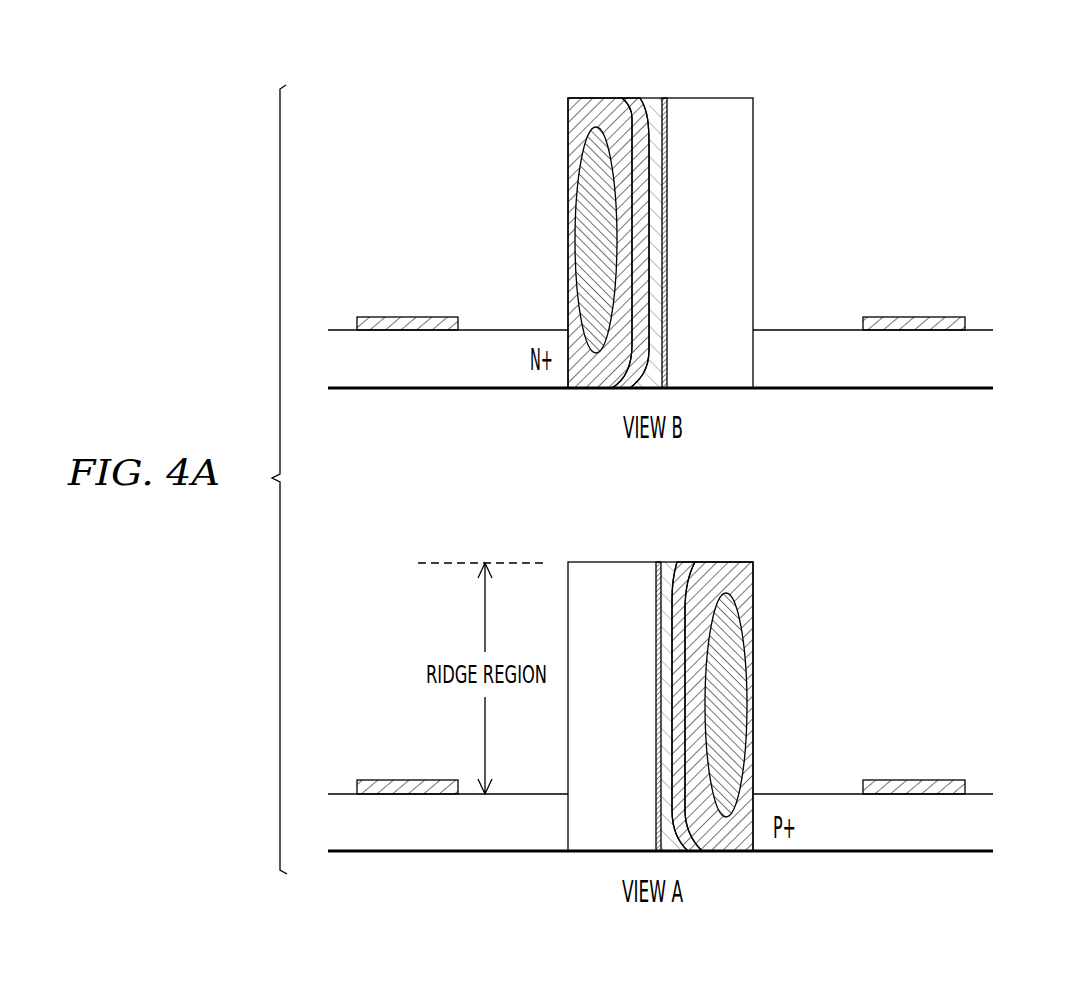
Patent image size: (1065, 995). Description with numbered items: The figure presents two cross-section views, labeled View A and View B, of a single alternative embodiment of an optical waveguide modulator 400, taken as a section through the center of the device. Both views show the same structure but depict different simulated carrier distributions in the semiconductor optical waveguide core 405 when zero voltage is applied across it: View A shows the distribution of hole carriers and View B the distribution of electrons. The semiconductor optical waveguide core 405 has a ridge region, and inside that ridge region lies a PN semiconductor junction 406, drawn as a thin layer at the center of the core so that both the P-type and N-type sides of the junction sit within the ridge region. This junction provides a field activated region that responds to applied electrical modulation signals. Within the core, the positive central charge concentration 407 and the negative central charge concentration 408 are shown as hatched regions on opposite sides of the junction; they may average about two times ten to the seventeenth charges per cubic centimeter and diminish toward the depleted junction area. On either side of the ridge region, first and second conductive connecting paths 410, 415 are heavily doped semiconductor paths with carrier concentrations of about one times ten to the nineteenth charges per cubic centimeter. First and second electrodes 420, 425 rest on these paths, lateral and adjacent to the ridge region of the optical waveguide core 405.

The optical waveguide modulator 400 is at (952, 170).
The semiconductor optical waveguide core 405 is at (758, 176).
The PN semiconductor junction 406 is at (665, 97).
The positive central charge concentration 407 is at (736, 690).
The negative central charge concentration 408 is at (587, 212).
The first conductive connecting path 410 is at (503, 328).
The second conductive connecting path 415 is at (817, 328).
The first electrode 420 is at (405, 316).
The second electrode 425 is at (935, 316).